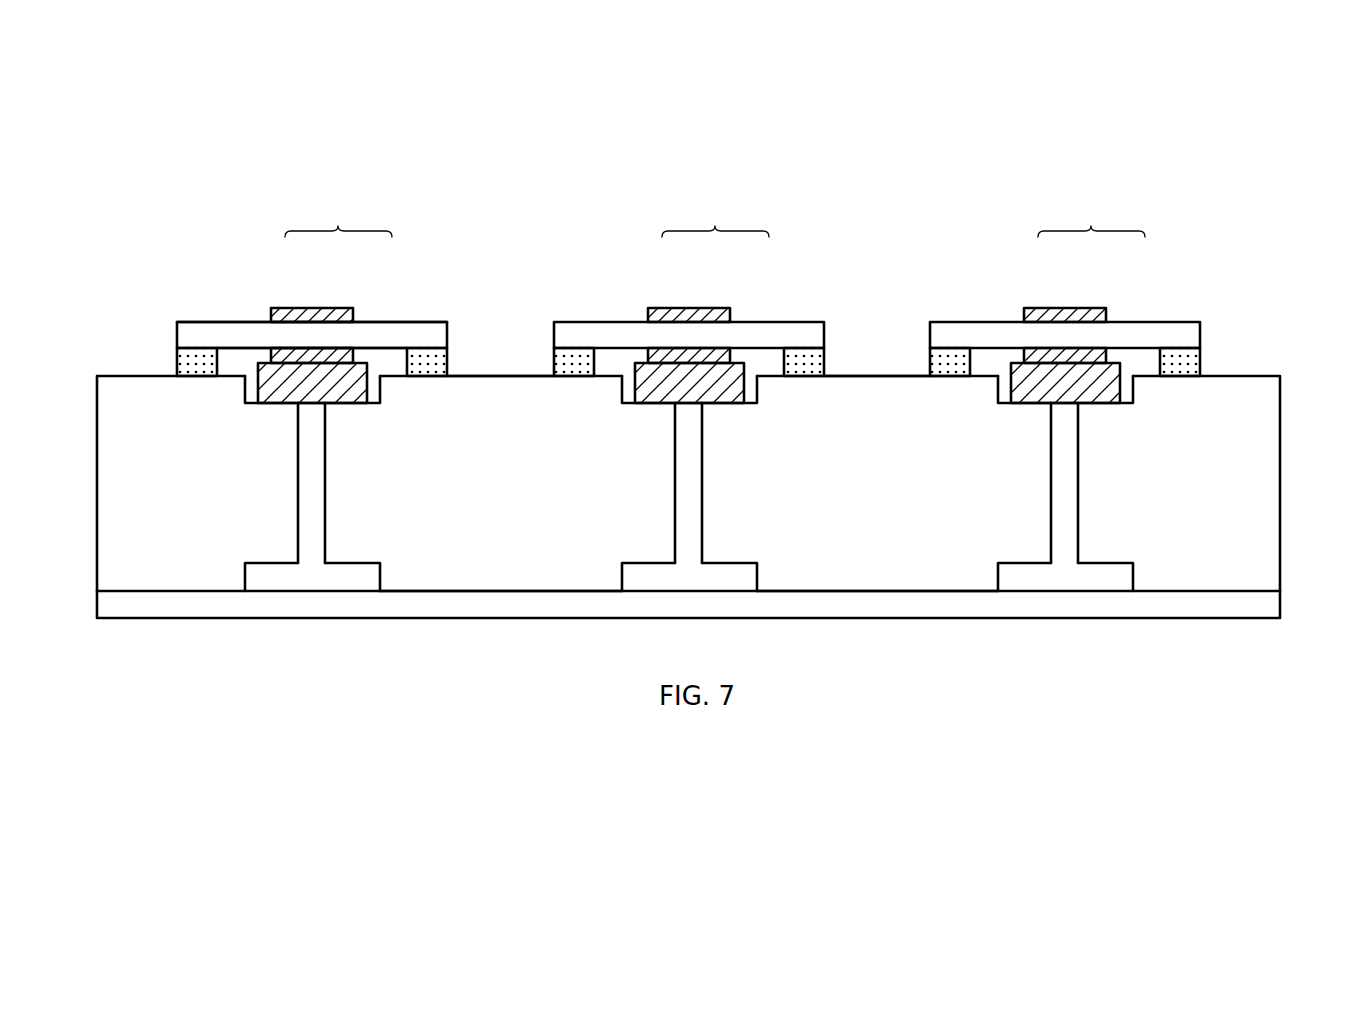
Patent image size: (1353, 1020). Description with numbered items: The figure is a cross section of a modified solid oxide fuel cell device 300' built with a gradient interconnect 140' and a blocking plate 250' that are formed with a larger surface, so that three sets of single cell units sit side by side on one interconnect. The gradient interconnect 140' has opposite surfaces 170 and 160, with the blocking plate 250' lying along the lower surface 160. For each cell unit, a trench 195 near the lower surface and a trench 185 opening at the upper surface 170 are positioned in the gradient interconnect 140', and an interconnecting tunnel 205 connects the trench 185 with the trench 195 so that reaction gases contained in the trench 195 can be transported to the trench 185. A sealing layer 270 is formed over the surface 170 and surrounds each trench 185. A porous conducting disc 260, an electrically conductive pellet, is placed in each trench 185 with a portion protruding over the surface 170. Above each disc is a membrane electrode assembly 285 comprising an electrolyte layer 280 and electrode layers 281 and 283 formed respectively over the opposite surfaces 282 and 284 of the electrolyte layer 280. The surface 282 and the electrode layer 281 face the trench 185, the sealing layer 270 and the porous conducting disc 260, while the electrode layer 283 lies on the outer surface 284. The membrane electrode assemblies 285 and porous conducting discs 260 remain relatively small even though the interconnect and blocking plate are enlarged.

The modified SOFC device 300' is at (97, 255).
The gradient interconnect 140' is at (667, 531).
The blocking plate 250' is at (725, 605).
The interconnecting tunnel 205 is at (294, 483).
The trench 195 is at (1138, 575).
The trench 185 is at (1138, 388).
The porous conducting disc 260 is at (283, 385).
The electrode layer 281 is at (282, 357).
The electrode layer 283 is at (337, 315).
The electrolyte layer 280 is at (391, 337).
The membrane electrode assembly 285 is at (715, 217).
The sealing layer 270 is at (1190, 362).
The surface of the electrolyte layer 284 is at (201, 320).
The surface of the electrolyte layer 282 is at (233, 351).
The surface of the gradient interconnect 170 is at (498, 373).
The surface of the gradient interconnect 160 is at (499, 595).